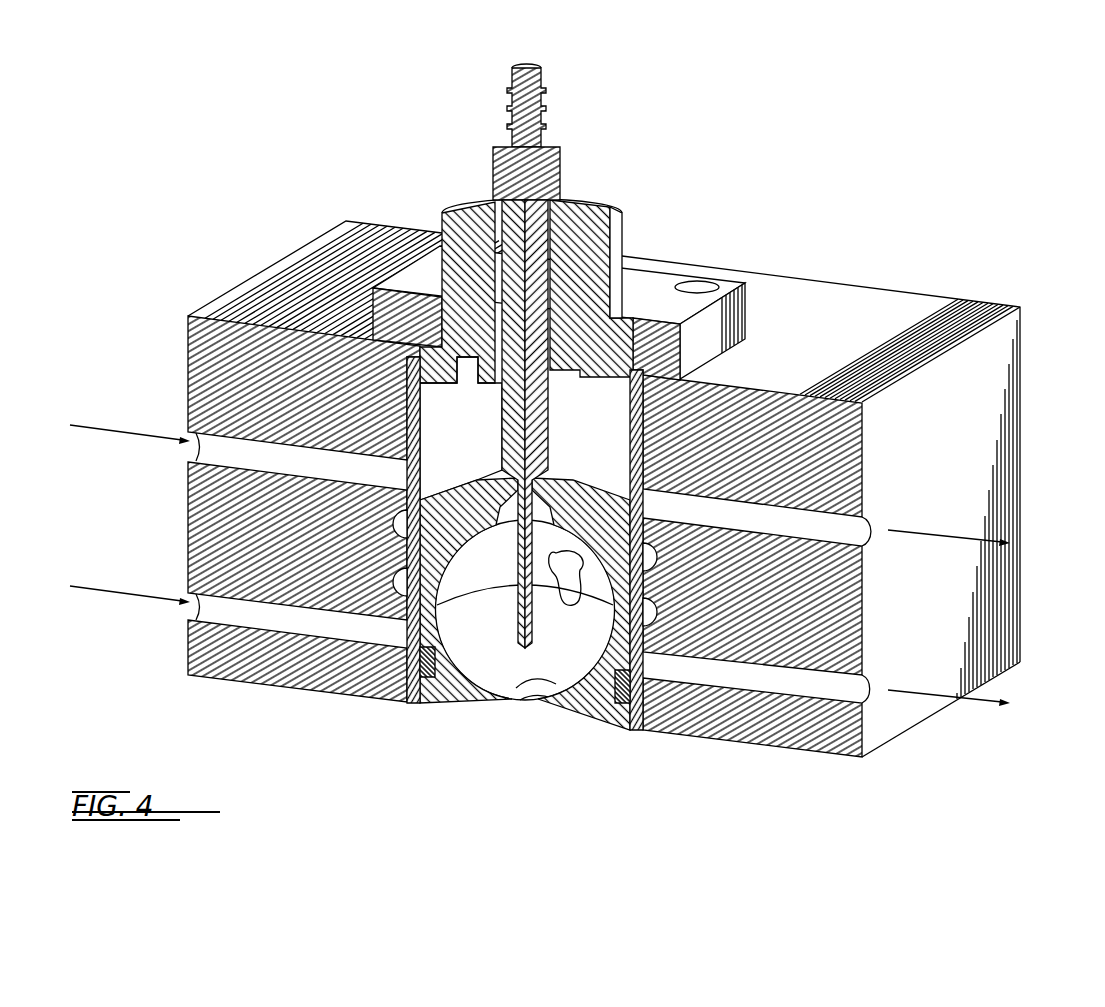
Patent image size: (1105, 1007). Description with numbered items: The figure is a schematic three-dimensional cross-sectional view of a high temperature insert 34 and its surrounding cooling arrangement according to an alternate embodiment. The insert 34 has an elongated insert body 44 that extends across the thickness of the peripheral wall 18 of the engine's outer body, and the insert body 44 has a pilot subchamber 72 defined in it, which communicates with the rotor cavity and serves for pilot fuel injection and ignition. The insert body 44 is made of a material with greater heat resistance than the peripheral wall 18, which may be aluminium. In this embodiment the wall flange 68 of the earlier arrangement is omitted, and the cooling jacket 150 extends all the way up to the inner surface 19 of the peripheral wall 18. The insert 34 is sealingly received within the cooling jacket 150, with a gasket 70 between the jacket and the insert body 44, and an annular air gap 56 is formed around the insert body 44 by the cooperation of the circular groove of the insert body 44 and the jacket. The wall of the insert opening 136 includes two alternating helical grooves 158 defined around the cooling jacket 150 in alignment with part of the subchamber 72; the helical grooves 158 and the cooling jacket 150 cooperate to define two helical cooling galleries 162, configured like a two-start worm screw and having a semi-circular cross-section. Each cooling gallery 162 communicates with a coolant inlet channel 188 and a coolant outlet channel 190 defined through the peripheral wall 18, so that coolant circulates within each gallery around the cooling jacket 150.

The peripheral wall 18 is at (951, 320).
The inner surface 19 is at (737, 746).
The high temperature insert 34 is at (624, 204).
The insert body 44 is at (556, 446).
The annular air gap 56 is at (447, 425).
The wall flange 68 is at (392, 314).
The gasket 70 is at (635, 723).
The pilot subchamber 72 is at (493, 677).
The insert opening 136 is at (425, 401).
The cooling jacket 150 is at (638, 736).
The helical grooves 158 is at (664, 558).
The helical cooling galleries 162 is at (389, 531).
The coolant inlet channel 188 is at (245, 612).
The coolant outlet channel 190 is at (870, 683).